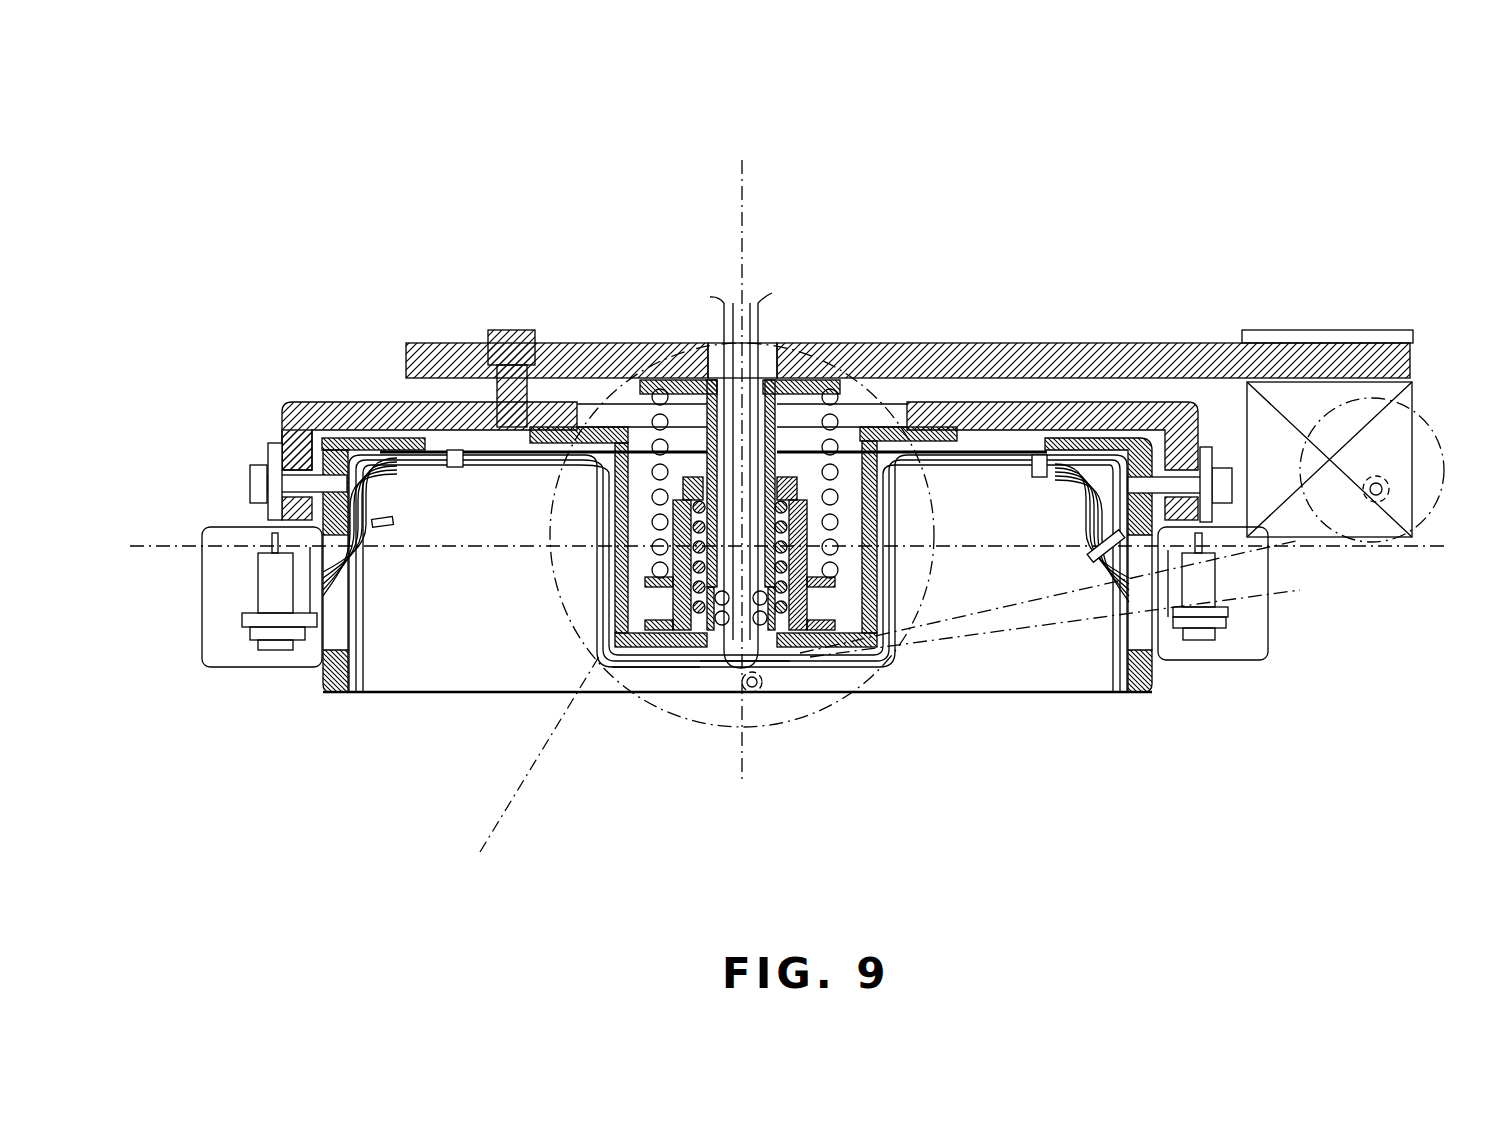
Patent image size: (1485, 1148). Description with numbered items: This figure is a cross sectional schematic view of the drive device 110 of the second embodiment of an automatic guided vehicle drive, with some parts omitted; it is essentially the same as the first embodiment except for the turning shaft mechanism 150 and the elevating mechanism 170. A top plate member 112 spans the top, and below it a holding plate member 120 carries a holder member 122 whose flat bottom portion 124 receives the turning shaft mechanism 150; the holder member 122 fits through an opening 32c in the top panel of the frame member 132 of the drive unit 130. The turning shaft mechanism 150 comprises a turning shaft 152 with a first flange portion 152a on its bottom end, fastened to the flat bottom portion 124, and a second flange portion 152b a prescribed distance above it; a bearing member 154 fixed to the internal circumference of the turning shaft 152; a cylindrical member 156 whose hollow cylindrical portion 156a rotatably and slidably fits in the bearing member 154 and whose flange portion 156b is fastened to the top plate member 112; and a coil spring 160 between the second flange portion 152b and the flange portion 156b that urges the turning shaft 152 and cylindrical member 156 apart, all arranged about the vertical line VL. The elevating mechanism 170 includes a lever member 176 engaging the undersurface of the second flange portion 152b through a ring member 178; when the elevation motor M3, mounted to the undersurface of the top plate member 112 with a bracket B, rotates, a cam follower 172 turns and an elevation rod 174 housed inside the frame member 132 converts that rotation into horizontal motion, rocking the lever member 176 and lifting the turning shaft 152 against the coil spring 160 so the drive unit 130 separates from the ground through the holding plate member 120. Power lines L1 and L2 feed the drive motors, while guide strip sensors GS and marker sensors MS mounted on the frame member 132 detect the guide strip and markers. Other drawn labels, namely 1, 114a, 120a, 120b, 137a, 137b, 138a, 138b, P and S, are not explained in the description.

The drive device 110 is at (1068, 210).
The top plate member 112 is at (460, 345).
The shaft 114a is at (764, 343).
The holding plate member 120 is at (378, 412).
The housing inner plate 120a is at (585, 420).
The housing side wall 120b is at (283, 410).
The holder member 122 is at (617, 590).
The flat bottom portion 124 is at (625, 632).
The drive unit 130 is at (1162, 698).
The frame member 132 is at (357, 700).
The optical path axis 137a is at (472, 779).
The optical path axis 137b is at (472, 779).
The pivot 138a is at (815, 800).
The pivot 138b is at (755, 692).
The turning shaft mechanism 150 is at (842, 527).
The turning shaft 152 is at (863, 629).
The first flange portion 152a is at (843, 642).
The second flange portion 152b is at (880, 605).
The bearing member 154 is at (620, 582).
The cylindrical member 156 is at (783, 462).
The hollow cylindrical portion 156a is at (907, 397).
The flange portion 156b is at (726, 495).
The coil spring 160 is at (823, 470).
The elevating mechanism 170 is at (1435, 620).
The cam follower 172 is at (1432, 400).
The elevation rod 174 is at (1258, 535).
The lever member 176 is at (710, 645).
The ring member 178 is at (667, 655).
The opening 32c is at (457, 470).
The nut 1 is at (674, 482).
The vertical line VL is at (748, 168).
The bolt P is at (258, 465).
The bracket B is at (1318, 330).
The sensor S is at (202, 530).
The guide strip sensors GS is at (1268, 640).
The marker sensors MS is at (1228, 625).
The elevation motor M3 is at (1345, 535).
The power line L1 is at (373, 597).
The power line L2 is at (1073, 535).